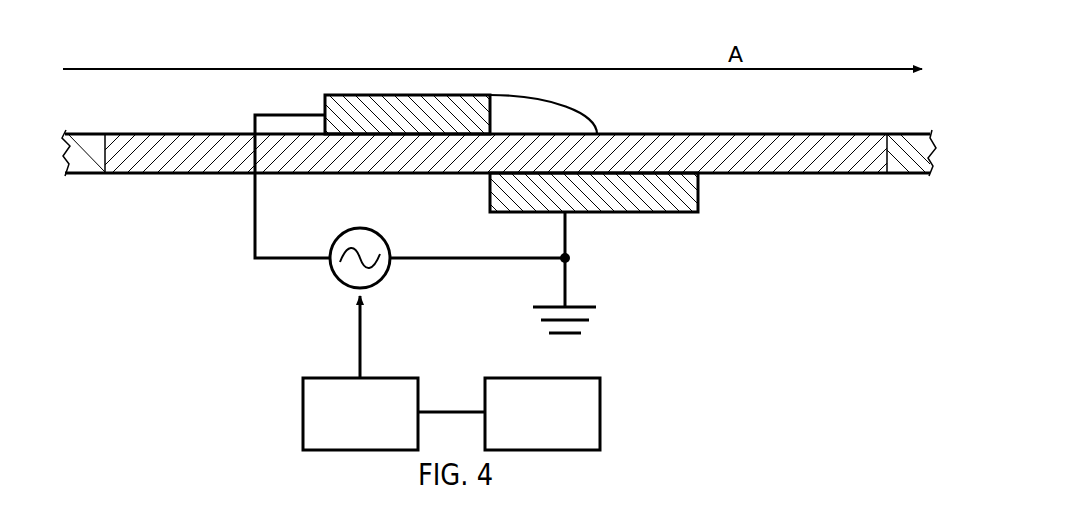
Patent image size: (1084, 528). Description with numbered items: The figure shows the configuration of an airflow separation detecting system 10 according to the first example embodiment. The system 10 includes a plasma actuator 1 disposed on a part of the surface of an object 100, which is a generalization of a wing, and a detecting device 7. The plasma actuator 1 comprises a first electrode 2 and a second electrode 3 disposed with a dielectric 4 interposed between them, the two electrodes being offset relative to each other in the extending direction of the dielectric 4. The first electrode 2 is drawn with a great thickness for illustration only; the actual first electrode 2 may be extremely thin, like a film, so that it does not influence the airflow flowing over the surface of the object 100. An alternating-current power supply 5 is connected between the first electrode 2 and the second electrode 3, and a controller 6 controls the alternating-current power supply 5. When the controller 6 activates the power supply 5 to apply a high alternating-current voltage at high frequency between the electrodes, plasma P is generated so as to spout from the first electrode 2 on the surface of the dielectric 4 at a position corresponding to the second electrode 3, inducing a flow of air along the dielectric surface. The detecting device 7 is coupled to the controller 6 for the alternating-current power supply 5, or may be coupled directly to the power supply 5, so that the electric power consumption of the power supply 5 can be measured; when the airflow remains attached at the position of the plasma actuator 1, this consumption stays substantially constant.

The plasma actuator 1 is at (618, 264).
The first electrode 2 is at (368, 115).
The second electrode 3 is at (668, 213).
The dielectric 4 is at (193, 165).
The alternating-current power supply 5 is at (396, 226).
The controller 6 is at (405, 375).
The detecting device 7 is at (585, 375).
The airflow separation detecting system 10 is at (259, 313).
The object 100 is at (92, 132).
The plasma P is at (550, 120).